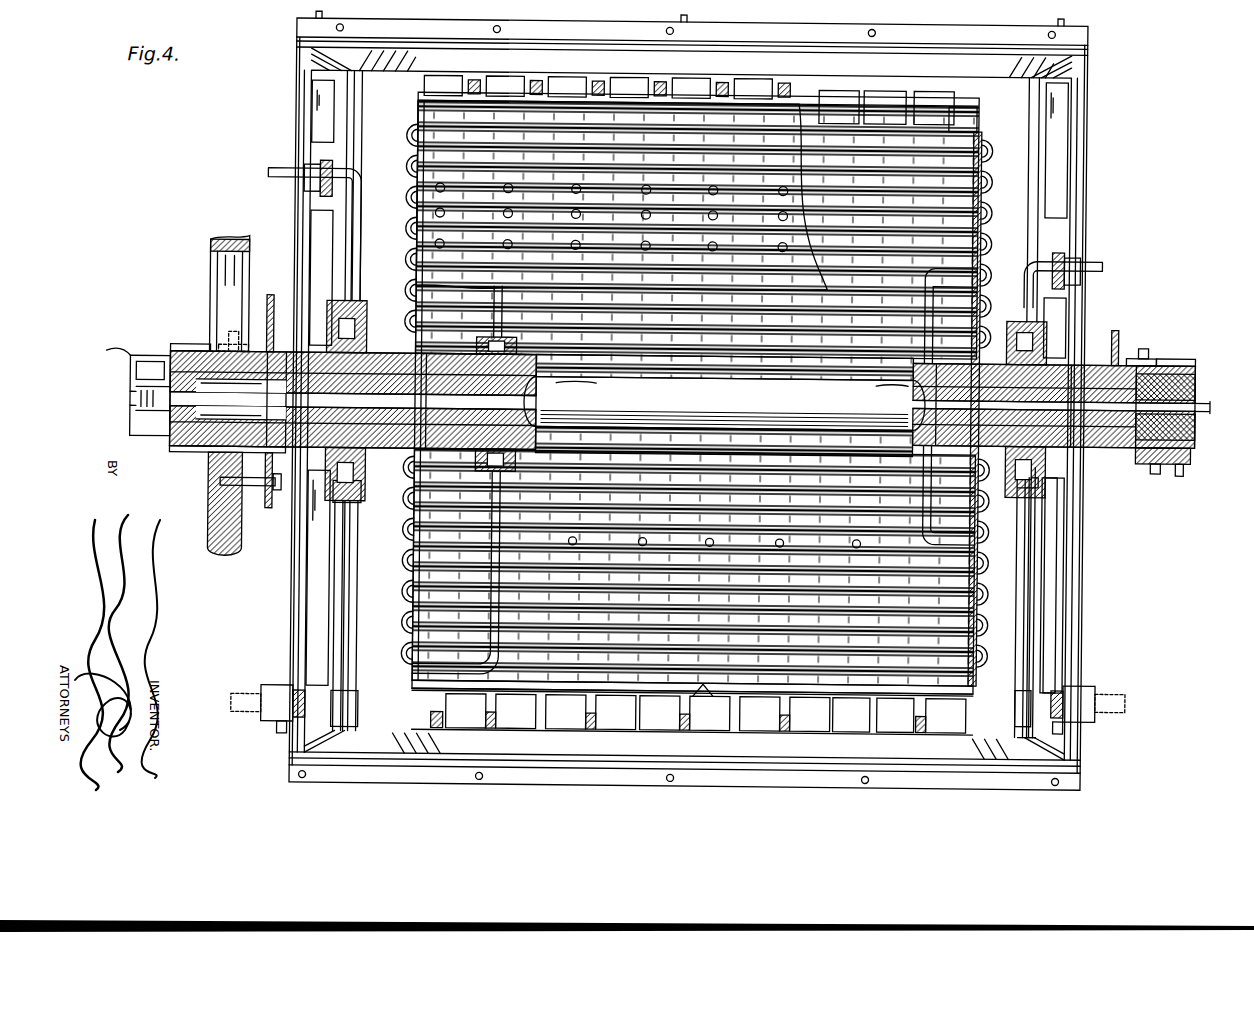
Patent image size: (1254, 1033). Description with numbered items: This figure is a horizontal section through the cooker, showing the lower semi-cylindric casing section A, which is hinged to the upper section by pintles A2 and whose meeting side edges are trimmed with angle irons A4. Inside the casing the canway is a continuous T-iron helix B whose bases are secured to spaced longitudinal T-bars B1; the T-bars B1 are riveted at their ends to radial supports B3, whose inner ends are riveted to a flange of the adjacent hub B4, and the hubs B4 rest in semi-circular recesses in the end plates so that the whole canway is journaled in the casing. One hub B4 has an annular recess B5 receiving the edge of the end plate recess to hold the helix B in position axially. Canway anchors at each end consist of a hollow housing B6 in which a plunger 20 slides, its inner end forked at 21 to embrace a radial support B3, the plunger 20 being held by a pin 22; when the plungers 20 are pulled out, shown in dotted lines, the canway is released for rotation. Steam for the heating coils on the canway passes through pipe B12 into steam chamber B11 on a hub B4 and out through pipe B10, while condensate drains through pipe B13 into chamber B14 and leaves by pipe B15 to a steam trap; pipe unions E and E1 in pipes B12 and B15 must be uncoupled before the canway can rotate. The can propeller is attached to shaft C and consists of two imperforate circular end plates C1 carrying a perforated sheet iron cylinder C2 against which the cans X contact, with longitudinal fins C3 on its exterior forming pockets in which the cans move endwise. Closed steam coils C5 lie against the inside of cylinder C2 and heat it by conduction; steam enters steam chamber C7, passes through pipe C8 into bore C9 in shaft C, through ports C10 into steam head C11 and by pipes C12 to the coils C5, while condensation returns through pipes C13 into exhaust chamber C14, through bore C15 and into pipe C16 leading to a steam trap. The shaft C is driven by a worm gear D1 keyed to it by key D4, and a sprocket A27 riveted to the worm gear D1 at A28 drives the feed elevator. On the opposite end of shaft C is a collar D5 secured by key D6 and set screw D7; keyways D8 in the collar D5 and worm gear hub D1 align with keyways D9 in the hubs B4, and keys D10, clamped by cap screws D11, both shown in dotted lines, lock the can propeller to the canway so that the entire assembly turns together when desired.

The lower semi-cylindric casing section A is at (1081, 172).
The pintles A2 is at (1066, 14).
The angle irons A4 is at (750, 35).
The sprocket A27 is at (273, 510).
The rivets A28 is at (220, 515).
The T-iron helix canway B is at (744, 84).
The longitudinal T-bars B1 is at (1052, 71).
The radial supports B3 is at (323, 117).
The canway hubs B4 is at (350, 298).
The annular recess B5 is at (235, 482).
The anchor housing B6 is at (272, 702).
The steam pipe B10 is at (364, 136).
The steam chamber B11 is at (358, 506).
The steam pipe B12 is at (276, 174).
The drain pipe B13 is at (1040, 630).
The condensate chamber B14 is at (1062, 542).
The steam trap pipe B15 is at (1037, 225).
The can propeller shaft C is at (724, 403).
The circular end plates C1 is at (982, 242).
The perforated sheet iron cylinder C2 is at (722, 690).
The longitudinal fins C3 is at (745, 262).
The closed steam coils C5 is at (412, 253).
The steam chamber C7 is at (105, 344).
The pipe C8 is at (134, 395).
The bore C9 is at (400, 440).
The ports C10 is at (551, 395).
The steam head C11 is at (590, 392).
The pipes C12 is at (502, 292).
The pipes C13 is at (905, 345).
The exhaust chamber C14 is at (835, 416).
The bore C15 is at (1050, 340).
The pipe C16 is at (1205, 386).
The worm gear D1 is at (227, 235).
The key D4 is at (188, 453).
The collar D5 is at (1184, 468).
The key D6 is at (1098, 453).
The set screw D7 is at (1162, 466).
The keyways D8 is at (188, 350).
The keyways D9 is at (272, 348).
The keys D10 is at (222, 348).
The cap screws D11 is at (232, 332).
The pipe union E is at (322, 185).
The pipe union E1 is at (1062, 258).
The cans X is at (889, 412).
The plunger 20 is at (282, 722).
The fork 21 is at (340, 694).
The pin 22 is at (290, 688).